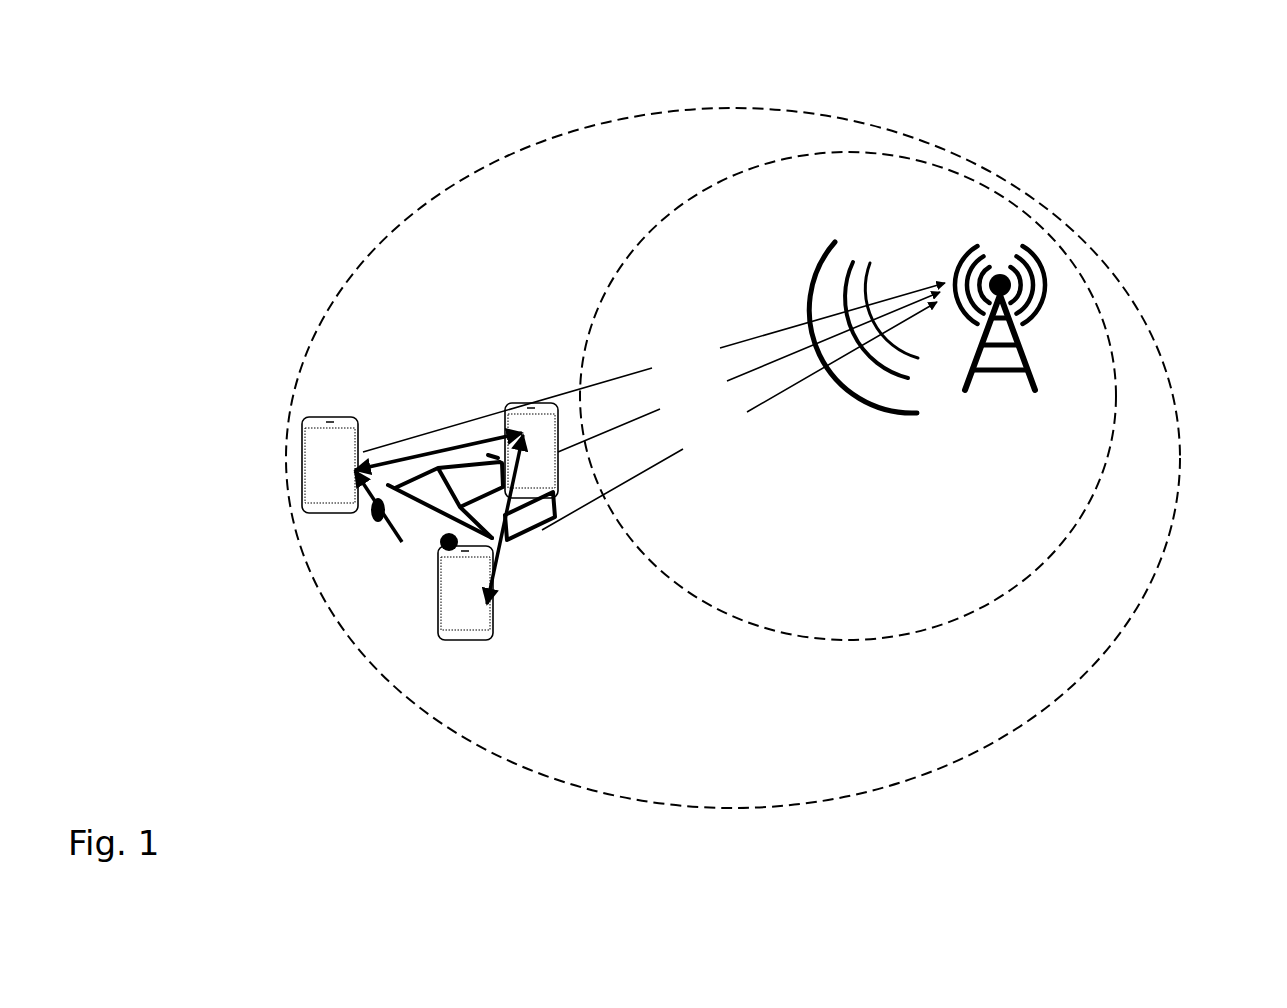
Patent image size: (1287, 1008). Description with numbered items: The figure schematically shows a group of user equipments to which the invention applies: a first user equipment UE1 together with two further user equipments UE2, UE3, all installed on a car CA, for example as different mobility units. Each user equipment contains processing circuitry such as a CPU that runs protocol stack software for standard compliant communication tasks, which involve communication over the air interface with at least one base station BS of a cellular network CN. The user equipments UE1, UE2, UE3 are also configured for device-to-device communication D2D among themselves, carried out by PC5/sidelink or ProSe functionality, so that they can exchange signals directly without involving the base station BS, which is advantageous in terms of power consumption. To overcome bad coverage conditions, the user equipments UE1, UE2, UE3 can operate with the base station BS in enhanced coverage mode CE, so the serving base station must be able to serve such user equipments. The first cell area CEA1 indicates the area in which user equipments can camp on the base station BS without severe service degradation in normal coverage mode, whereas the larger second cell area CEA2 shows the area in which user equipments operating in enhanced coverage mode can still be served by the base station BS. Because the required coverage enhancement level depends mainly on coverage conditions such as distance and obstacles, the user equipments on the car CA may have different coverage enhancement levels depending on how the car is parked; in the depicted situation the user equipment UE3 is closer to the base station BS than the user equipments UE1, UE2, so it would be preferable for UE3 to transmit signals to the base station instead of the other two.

The cell area 1 CEA1 is at (773, 190).
The cell area 2 CEA2 is at (527, 233).
The cellular network CN is at (1114, 207).
The base station BS is at (927, 345).
The enhanced coverage mode CE is at (654, 406).
The first user equipment UE1 is at (295, 473).
The second user equipment UE2 is at (438, 614).
The third user equipment UE3 is at (567, 478).
The car CA is at (453, 477).
The device-to-device communication D2D is at (436, 600).